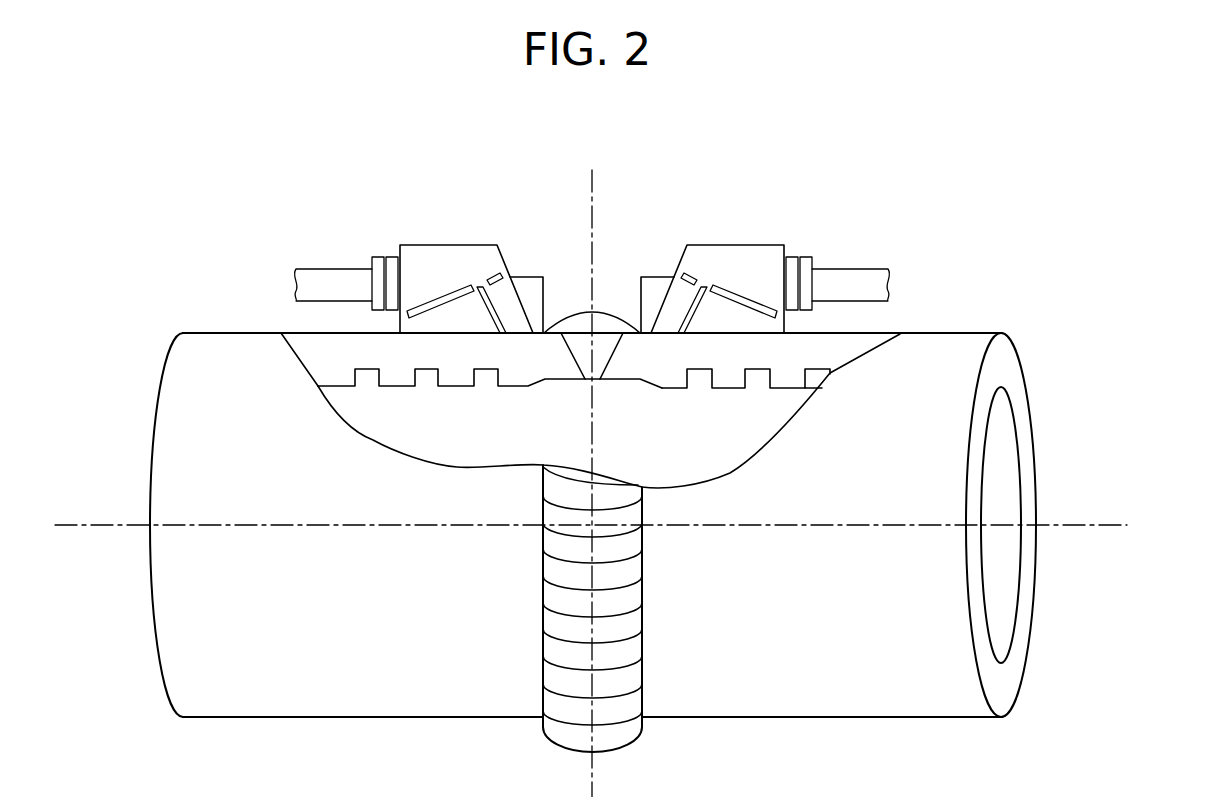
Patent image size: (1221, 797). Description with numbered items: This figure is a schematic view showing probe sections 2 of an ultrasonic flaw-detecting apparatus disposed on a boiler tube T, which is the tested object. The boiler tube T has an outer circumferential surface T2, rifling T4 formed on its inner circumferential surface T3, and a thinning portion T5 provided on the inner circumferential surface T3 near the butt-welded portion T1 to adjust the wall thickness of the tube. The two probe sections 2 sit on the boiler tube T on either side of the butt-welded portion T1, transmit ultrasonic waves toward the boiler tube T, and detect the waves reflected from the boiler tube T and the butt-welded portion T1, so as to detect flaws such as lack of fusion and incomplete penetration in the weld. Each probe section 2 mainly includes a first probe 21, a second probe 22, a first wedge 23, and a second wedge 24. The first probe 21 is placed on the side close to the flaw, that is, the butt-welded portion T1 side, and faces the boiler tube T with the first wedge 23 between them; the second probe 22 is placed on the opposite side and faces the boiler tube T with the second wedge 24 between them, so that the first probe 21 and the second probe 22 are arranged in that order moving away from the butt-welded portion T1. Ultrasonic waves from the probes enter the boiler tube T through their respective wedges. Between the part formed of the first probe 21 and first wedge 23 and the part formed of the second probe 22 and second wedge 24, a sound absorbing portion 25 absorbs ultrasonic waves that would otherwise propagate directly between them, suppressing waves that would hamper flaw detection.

The probe section 2 is at (420, 150).
The first probe 21 is at (493, 270).
The second probe 22 is at (447, 280).
The first wedge 23 is at (520, 327).
The second wedge 24 is at (443, 325).
The sound absorbing portion 25 is at (500, 325).
The boiler tube T is at (1115, 407).
The butt-welded portion T1 is at (607, 323).
The outer circumferential surface T2 is at (962, 333).
The inner circumferential surface T3 is at (727, 388).
The rifling T4 is at (815, 370).
The thinning portion T5 is at (618, 382).